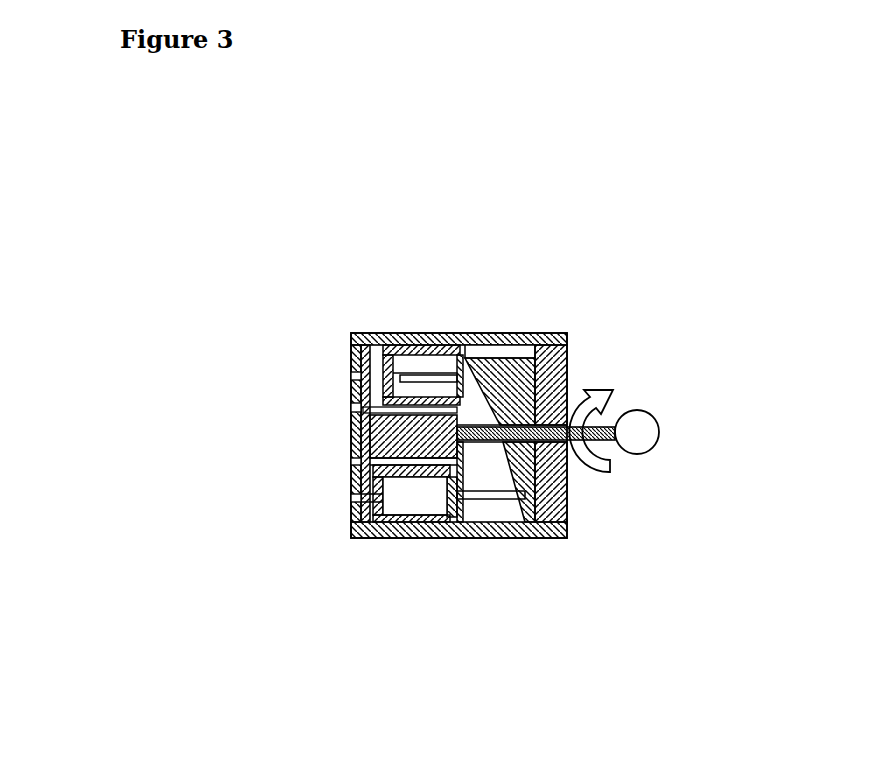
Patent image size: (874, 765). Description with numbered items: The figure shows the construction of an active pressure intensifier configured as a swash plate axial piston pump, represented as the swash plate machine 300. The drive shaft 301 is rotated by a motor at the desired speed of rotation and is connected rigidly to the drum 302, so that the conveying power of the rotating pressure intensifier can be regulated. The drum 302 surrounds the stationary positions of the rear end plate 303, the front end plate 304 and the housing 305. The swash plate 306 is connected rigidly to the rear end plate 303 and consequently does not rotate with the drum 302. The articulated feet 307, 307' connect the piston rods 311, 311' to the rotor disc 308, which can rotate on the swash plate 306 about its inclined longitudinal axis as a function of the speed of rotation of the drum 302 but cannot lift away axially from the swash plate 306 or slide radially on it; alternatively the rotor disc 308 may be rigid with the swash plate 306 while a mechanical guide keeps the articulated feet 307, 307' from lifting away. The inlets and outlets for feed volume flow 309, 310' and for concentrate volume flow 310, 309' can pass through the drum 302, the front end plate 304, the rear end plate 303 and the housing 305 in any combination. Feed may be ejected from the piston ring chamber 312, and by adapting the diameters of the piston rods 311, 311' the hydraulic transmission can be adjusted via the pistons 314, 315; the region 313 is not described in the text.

The swash plate machine 300 is at (594, 592).
The drive shaft 301 is at (595, 425).
The drum 302 is at (352, 432).
The rear end plate 303 is at (565, 495).
The front end plate 304 is at (351, 519).
The housing 305 is at (370, 336).
The swash plate 306 is at (560, 335).
The articulated foot 307 is at (520, 536).
The articulated foot 307' is at (500, 319).
The rotor disc 308 is at (505, 345).
The inlet/outlet for feed volume flow 309 is at (314, 465).
The inlet/outlet for concentrate volume flow 309' is at (210, 498).
The inlet/outlet for concentrate volume flow 310 is at (308, 330).
The inlet/outlet for feed volume flow 310' is at (323, 368).
The piston rod 311 is at (430, 279).
The piston rod 311' is at (475, 555).
The piston ring chamber 312 is at (408, 350).
The lower cylinder chamber 313 is at (412, 497).
The piston 314 is at (392, 352).
The piston 315 is at (442, 505).